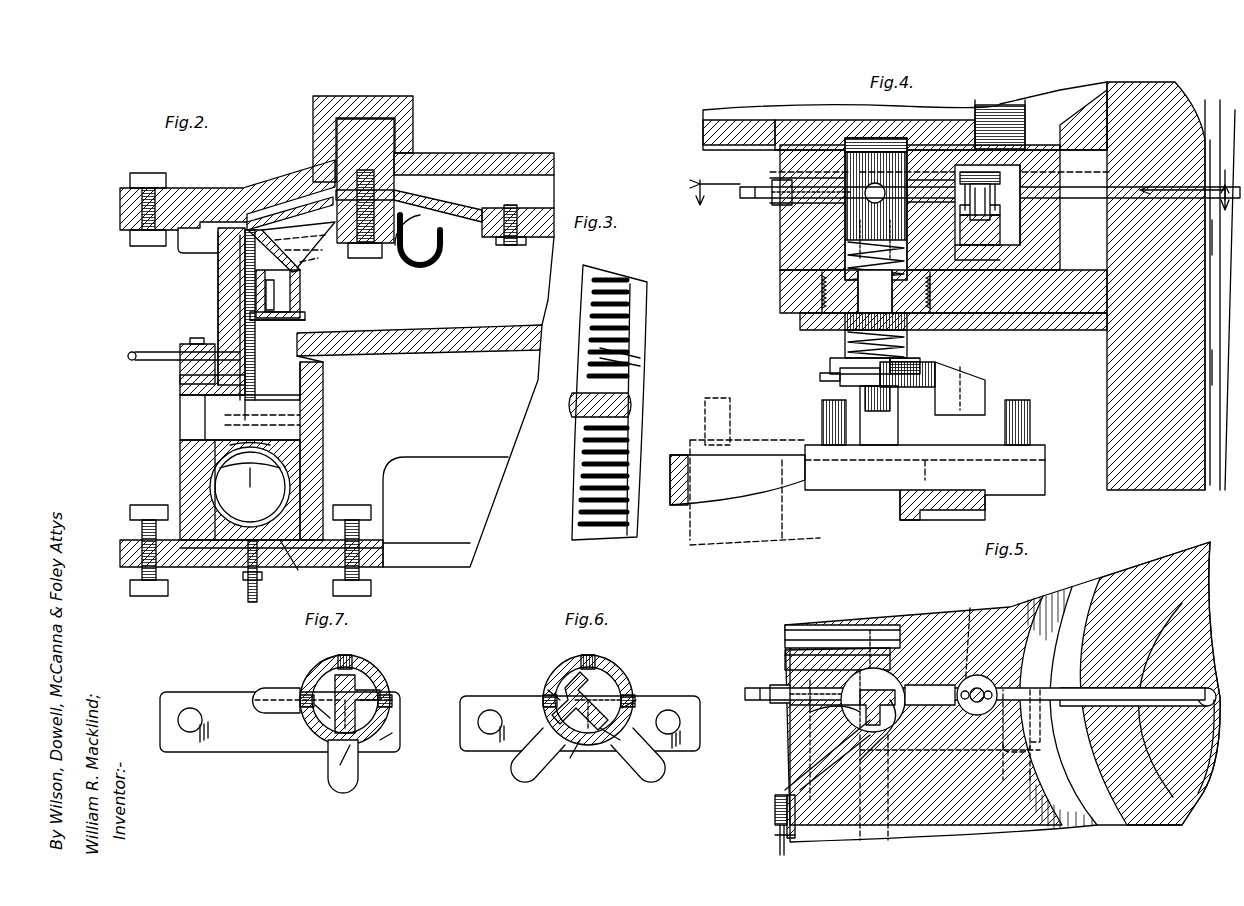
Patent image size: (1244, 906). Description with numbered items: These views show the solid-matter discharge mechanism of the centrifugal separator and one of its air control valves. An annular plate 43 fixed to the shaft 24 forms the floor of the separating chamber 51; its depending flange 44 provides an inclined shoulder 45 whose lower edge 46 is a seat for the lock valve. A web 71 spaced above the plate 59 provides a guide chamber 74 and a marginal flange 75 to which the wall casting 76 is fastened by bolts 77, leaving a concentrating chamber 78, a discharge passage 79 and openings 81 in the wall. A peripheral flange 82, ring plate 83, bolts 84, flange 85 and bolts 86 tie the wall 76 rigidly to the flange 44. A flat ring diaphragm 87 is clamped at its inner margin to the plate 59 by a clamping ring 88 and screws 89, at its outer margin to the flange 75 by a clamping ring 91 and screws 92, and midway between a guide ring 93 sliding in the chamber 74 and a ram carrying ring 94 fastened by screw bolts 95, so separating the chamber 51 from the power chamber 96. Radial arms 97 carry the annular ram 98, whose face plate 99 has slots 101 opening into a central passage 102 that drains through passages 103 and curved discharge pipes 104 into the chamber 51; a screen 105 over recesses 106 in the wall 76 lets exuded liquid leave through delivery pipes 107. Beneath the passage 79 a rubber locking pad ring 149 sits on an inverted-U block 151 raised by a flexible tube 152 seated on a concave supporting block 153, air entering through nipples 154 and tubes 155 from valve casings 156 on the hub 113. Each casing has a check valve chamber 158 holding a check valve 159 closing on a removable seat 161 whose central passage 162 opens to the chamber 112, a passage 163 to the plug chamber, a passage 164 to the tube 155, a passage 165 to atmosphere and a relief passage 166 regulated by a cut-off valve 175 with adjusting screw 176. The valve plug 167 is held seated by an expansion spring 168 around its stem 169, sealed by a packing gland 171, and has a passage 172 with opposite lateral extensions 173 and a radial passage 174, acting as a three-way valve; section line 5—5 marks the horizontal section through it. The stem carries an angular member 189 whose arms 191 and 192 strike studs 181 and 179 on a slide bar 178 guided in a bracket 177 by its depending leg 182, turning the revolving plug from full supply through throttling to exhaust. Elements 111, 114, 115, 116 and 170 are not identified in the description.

In FIG. 4, the section line 5— 5 is at (954, 183).
In FIG. 4, the shaft 24 is at (1110, 385).
In FIG. 5, the shaft 24 is at (1185, 614).
In FIG. 2, the annular plate 43 is at (510, 340).
In FIG. 2, the depending flange 44 is at (323, 474).
In FIG. 2, the inclined ledge or shoulder 45 is at (300, 372).
In FIG. 2, the lower edge of shoulder 46 is at (275, 395).
In FIG. 2, the separating chamber 51 is at (482, 290).
In FIG. 2, the plate 59 is at (553, 205).
In FIG. 2, the web 71 is at (478, 158).
In FIG. 2, the guide chamber 74 is at (378, 118).
In FIG. 2, the marginal flange 75 is at (195, 196).
In FIG. 2, the wall casting 76 is at (222, 310).
In FIG. 2, the bolts 77 is at (150, 176).
In FIG. 2, the concentrating chamber 78 is at (262, 385).
In FIG. 2, the discharge passage 79 is at (180, 390).
In FIG. 2, the ports or openings 81 is at (185, 428).
In FIG. 2, the peripheral flange 82 is at (132, 510).
In FIG. 2, the ring plate 83 is at (222, 566).
In FIG. 2, the bolts 84 is at (152, 582).
In FIG. 2, the flange 85 is at (375, 522).
In FIG. 2, the bolts 86 is at (370, 578).
In FIG. 2, the diaphragm 87 is at (455, 210).
In FIG. 2, the clamping ring 88 is at (490, 238).
In FIG. 2, the screws 89 is at (510, 240).
In FIG. 2, the clamping ring 91 is at (178, 250).
In FIG. 2, the screws 92 is at (215, 254).
In FIG. 2, the guide ring 93 is at (375, 128).
In FIG. 2, the ram carrying ring 94 is at (425, 228).
In FIG. 2, the screw bolts 95 is at (368, 250).
In FIG. 2, the power or ram actuating chamber 96 is at (525, 180).
In FIG. 2, the radially disposed arms 97 is at (300, 262).
In FIG. 3, the radially disposed arms 97 is at (636, 405).
In FIG. 2, the ram 98 is at (295, 310).
In FIG. 2, the face plate 99 is at (305, 318).
In FIG. 3, the face plate 99 is at (641, 322).
In FIG. 2, the slots 101 is at (275, 321).
In FIG. 3, the slots 101 is at (630, 358).
In FIG. 2, the central passage 102 is at (300, 300).
In FIG. 2, the passages 103 is at (318, 232).
In FIG. 2, the curved discharge pipe 104 is at (428, 262).
In FIG. 2, the screen or grating 105 is at (240, 300).
In FIG. 2, the recess 106 is at (245, 270).
In FIG. 2, the delivery pipes 107 is at (145, 352).
In FIG. 4, the top plate 111 is at (985, 105).
In FIG. 4, the chamber 112 is at (1027, 260).
In FIG. 5, the chamber 112 is at (1095, 832).
In FIG. 4, the hub 113 is at (1075, 135).
In FIG. 5, the hub 113 is at (1000, 628).
In FIG. 4, the recess 114 is at (1010, 229).
In FIG. 5, the recess 114 is at (1045, 690).
In FIG. 4, the shaft 115 is at (1110, 210).
In FIG. 5, the shaft 115 is at (1185, 690).
In FIG. 4, the guide strip 116 is at (1200, 478).
In FIG. 5, the guide strip 116 is at (1208, 760).
In FIG. 2, the locking pad ring 149 is at (300, 420).
In FIG. 2, the annular block 151 is at (290, 458).
In FIG. 2, the annular flexible tube 152 is at (250, 487).
In FIG. 2, the stationary concave supporting block 153 is at (290, 560).
In FIG. 2, the nipples 154 is at (248, 580).
In FIG. 2, the tubes 155 is at (258, 585).
In FIG. 4, the tubes 155 is at (750, 199).
In FIG. 5, the tubes 155 is at (765, 688).
In FIG. 4, the control valve casings 156 is at (795, 152).
In FIG. 7, the control valve casings 156 is at (312, 722).
In FIG. 6, the control valve casings 156 is at (635, 680).
In FIG. 4, the check valve chambers 158 is at (1000, 185).
In FIG. 5, the check valve chambers 158 is at (1000, 688).
In FIG. 4, the check valve 159 is at (1005, 205).
In FIG. 4, the removable seat 161 is at (977, 257).
In FIG. 4, the central passage 162 is at (1010, 300).
In FIG. 4, the passage 163 is at (930, 190).
In FIG. 5, the passage 163 is at (940, 690).
In FIG. 7, the passage 163 is at (393, 697).
In FIG. 6, the passage 163 is at (636, 696).
In FIG. 4, the passage 164 is at (810, 200).
In FIG. 5, the passage 164 is at (800, 705).
In FIG. 7, the passage 164 is at (305, 692).
In FIG. 6, the passage 164 is at (545, 692).
In FIG. 5, the passage 165 is at (788, 632).
In FIG. 7, the passage 165 is at (352, 658).
In FIG. 6, the passage 165 is at (596, 658).
In FIG. 5, the relief passage 166 is at (792, 790).
In FIG. 7, the relief passage 166 is at (338, 740).
In FIG. 6, the relief passage 166 is at (575, 748).
In FIG. 4, the valve plug 167 is at (876, 209).
In FIG. 5, the valve plug 167 is at (880, 690).
In FIG. 7, the valve plug 167 is at (388, 680).
In FIG. 6, the valve plug 167 is at (570, 678).
In FIG. 4, the expansion spring 168 is at (845, 255).
In FIG. 4, the stem 169 is at (858, 290).
In FIG. 5, the stem 169 is at (790, 652).
In FIG. 4, the bore 170 is at (868, 231).
In FIG. 4, the packing gland 171 is at (822, 328).
In FIG. 4, the passage 172 is at (845, 172).
In FIG. 5, the passage 172 is at (875, 690).
In FIG. 7, the passage 172 is at (380, 675).
In FIG. 6, the passage 172 is at (630, 668).
In FIG. 5, the lateral extensions 173 is at (830, 722).
In FIG. 7, the lateral extensions 173 is at (330, 665).
In FIG. 6, the lateral extensions 173 is at (540, 688).
In FIG. 5, the radial passage 174 is at (865, 757).
In FIG. 7, the radial passage 174 is at (318, 712).
In FIG. 6, the radial passage 174 is at (612, 742).
In FIG. 5, the cut-off valve 175 is at (775, 800).
In FIG. 5, the adjusting screw 176 is at (778, 838).
In FIG. 4, the guideway bracket 177 is at (955, 512).
In FIG. 4, the slide bar 178 is at (1045, 480).
In FIG. 7, the slide bar 178 is at (228, 740).
In FIG. 6, the slide bar 178 is at (500, 745).
In FIG. 4, the stud 179 is at (735, 420).
In FIG. 5, the stud 179 is at (810, 748).
In FIG. 7, the stud 179 is at (185, 728).
In FIG. 6, the stud 179 is at (487, 733).
In FIG. 4, the stud 181 is at (1015, 425).
In FIG. 5, the stud 181 is at (1029, 762).
In FIG. 7, the stud 181 is at (395, 716).
In FIG. 6, the stud 181 is at (675, 735).
In FIG. 4, the depending leg 182 is at (870, 526).
In FIG. 4, the angular member 189 is at (910, 360).
In FIG. 6, the angular member 189 is at (615, 660).
In FIG. 4, the adjustment arm 191 is at (975, 395).
In FIG. 5, the adjustment arm 191 is at (970, 608).
In FIG. 7, the adjustment arm 191 is at (352, 775).
In FIG. 6, the adjustment arm 191 is at (655, 768).
In FIG. 4, the adjustment arm 192 is at (873, 405).
In FIG. 5, the adjustment arm 192 is at (886, 838).
In FIG. 7, the adjustment arm 192 is at (270, 690).
In FIG. 6, the adjustment arm 192 is at (533, 762).